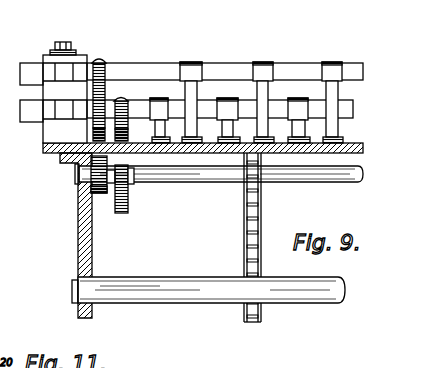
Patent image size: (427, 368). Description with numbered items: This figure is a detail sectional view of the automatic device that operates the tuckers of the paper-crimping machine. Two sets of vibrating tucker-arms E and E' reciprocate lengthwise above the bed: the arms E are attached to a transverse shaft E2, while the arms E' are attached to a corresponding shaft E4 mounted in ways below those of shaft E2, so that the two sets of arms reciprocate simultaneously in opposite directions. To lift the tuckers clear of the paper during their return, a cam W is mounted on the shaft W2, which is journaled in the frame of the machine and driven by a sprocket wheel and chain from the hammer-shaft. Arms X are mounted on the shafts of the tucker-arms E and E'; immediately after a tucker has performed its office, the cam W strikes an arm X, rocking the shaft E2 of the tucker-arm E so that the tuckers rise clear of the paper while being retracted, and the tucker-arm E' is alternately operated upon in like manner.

The arm X is at (106, 73).
The vibrating arm E is at (345, 102).
The transverse shaft E2 is at (363, 73).
The shaft E4 is at (353, 108).
The vibrating arm E' is at (336, 120).
The cam W is at (100, 193).
The shaft W2 is at (170, 176).